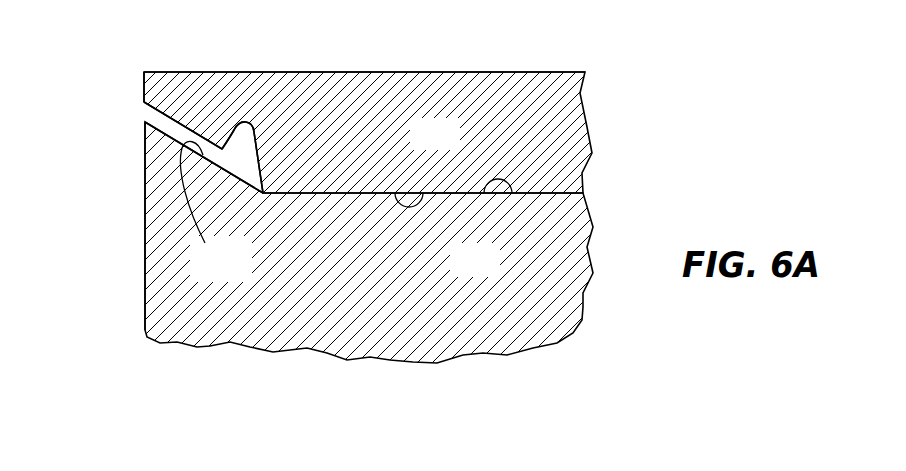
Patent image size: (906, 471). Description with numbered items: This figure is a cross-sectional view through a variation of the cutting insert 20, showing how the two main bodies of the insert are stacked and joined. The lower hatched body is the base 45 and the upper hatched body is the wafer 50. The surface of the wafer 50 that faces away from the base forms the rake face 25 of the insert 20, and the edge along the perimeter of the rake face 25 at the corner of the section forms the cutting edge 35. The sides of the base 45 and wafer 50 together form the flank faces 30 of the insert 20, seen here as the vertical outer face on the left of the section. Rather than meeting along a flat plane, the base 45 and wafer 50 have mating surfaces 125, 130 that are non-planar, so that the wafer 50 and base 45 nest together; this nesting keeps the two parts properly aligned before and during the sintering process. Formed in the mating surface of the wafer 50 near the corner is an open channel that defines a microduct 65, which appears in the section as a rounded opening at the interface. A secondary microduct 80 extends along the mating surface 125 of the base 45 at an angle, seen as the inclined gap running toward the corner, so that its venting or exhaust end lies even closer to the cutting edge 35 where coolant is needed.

The insert 20 is at (95, 283).
The rake face 25 is at (387, 72).
The flank faces 30 is at (145, 167).
The cutting edge 35 is at (143, 73).
The base 45 is at (147, 223).
The wafer 50 is at (507, 82).
The microduct 65 is at (258, 133).
The secondary microducts 80 is at (150, 119).
The mating surface of the base 125 is at (484, 193).
The mating surface of the wafer 130 is at (423, 193).